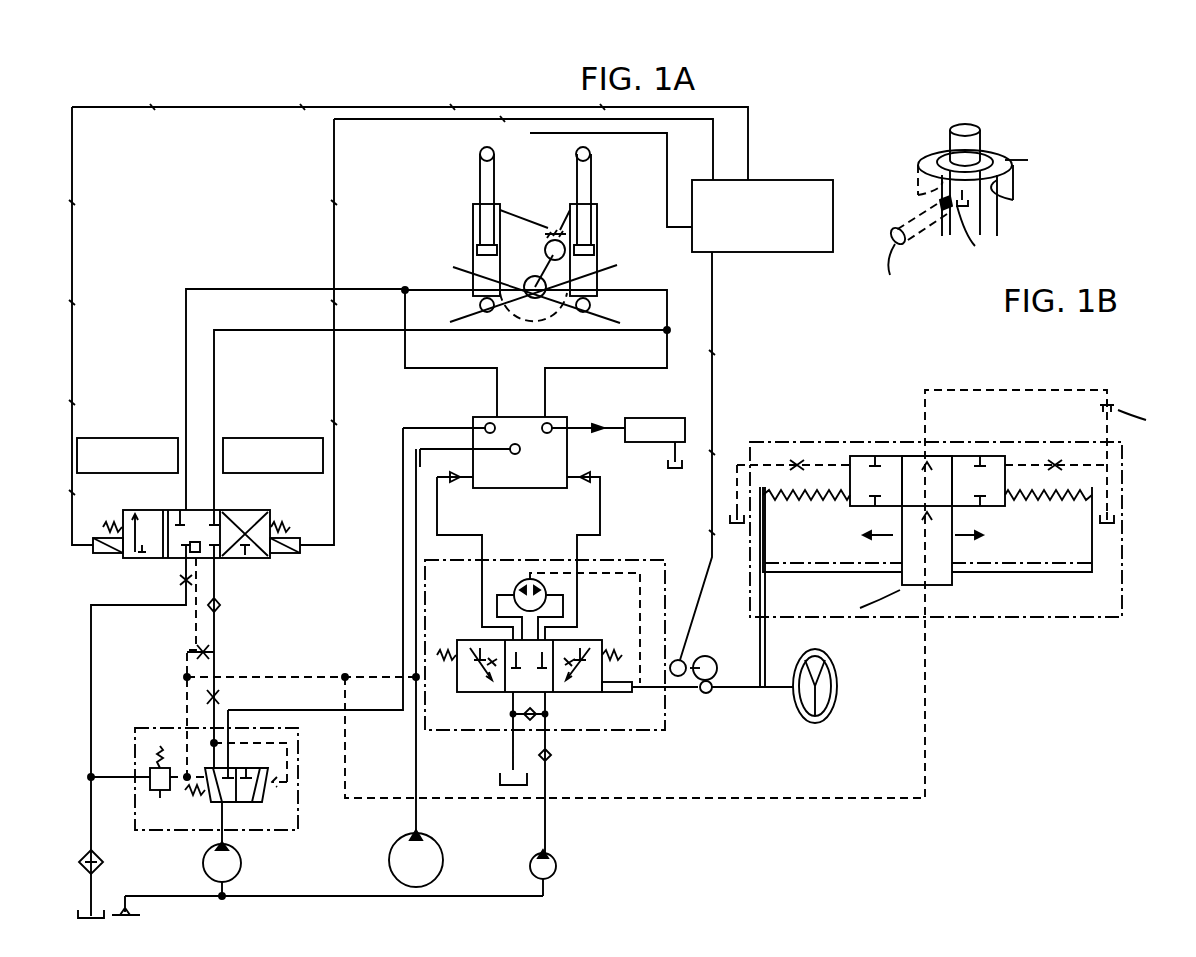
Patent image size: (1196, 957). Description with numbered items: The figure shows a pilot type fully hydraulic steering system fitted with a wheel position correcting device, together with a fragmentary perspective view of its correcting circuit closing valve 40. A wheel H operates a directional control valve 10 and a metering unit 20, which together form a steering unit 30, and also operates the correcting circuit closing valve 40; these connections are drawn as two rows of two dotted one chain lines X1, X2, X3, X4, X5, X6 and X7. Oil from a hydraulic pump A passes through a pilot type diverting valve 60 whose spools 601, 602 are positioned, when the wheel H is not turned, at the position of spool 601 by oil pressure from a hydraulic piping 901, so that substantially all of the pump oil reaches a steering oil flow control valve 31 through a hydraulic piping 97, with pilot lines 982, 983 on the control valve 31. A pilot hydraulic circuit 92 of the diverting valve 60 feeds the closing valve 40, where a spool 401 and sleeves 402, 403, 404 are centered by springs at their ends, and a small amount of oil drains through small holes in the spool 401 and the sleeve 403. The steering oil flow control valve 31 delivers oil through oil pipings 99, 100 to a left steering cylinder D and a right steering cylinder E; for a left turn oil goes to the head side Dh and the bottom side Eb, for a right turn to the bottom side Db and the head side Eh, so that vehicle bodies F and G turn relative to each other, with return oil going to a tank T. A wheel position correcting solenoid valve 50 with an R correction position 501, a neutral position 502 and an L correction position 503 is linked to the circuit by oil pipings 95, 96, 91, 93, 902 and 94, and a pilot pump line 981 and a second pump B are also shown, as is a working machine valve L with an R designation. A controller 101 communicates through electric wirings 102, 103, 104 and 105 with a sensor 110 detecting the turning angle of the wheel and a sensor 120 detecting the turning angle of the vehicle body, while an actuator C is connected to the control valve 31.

In FIG. 1A, the controller 101 is at (798, 180).
In FIG. 1A, the electric wiring 102 is at (714, 369).
In FIG. 1A, the electric wiring 103 is at (665, 165).
In FIG. 1A, the electric wiring 104 is at (713, 166).
In FIG. 1A, the electric wiring 105 is at (752, 134).
In FIG. 1A, the sensor 120 is at (555, 238).
In FIG. 1A, the oil piping 99 is at (458, 368).
In FIG. 1A, the oil piping 100 is at (583, 368).
In FIG. 1A, the oil piping 96 is at (186, 343).
In FIG. 1A, the oil piping 95 is at (214, 386).
In FIG. 1A, the wheel position correcting solenoid valve 50 is at (262, 510).
In FIG. 1A, the R correction position 501 is at (242, 510).
In FIG. 1A, the position of wheel position correcting solenoid valve 502 is at (180, 510).
In FIG. 1A, the L correction position 503 is at (135, 510).
In FIG. 1A, the steering oil flow control valve 31 is at (525, 488).
In FIG. 1A, the oil piping 982 is at (437, 516).
In FIG. 1A, the oil piping 983 is at (600, 516).
In FIG. 1A, the steering unit 30 is at (644, 560).
In FIG. 1A, the metering unit 20 is at (516, 588).
In FIG. 1A, the directional control valve 10 is at (570, 692).
In FIG. 1A, the sensor 110 is at (686, 660).
In FIG. 1A, the oil piping 91 is at (190, 648).
In FIG. 1A, the oil piping 93 is at (91, 677).
In FIG. 1A, the oil piping 902 is at (214, 630).
In FIG. 1A, the hydraulic piping 901 is at (222, 705).
In FIG. 1A, the hydraulic piping 97 is at (345, 685).
In FIG. 1A, the pilot type diverting valve 60 is at (298, 733).
In FIG. 1A, the spool 601 is at (238, 803).
In FIG. 1A, the spool 602 is at (200, 805).
In FIG. 1A, the oil piping 981 is at (548, 824).
In FIG. 1A, the pilot hydraulic circuit 92 is at (642, 798).
In FIG. 1A, the oil piping 94 is at (997, 390).
In FIG. 1A, the correcting circuit closing valve 40 is at (1122, 510).
In FIG. 1B, the correcting circuit closing valve 40 is at (1015, 213).
In FIG. 1A, the spool 401 is at (952, 588).
In FIG. 1B, the spool 401 is at (980, 135).
In FIG. 1A, the sleeve 402 is at (1008, 456).
In FIG. 1A, the sleeve 403 is at (940, 456).
In FIG. 1A, the sleeve 404 is at (870, 456).
In FIG. 1A, the left steering cylinder D is at (473, 200).
In FIG. 1A, the head side of left steering cylinder Dh is at (473, 218).
In FIG. 1A, the bottom side of left steering cylinder Db is at (473, 262).
In FIG. 1A, the right steering cylinder E is at (597, 200).
In FIG. 1A, the head side of right steering cylinder Eh is at (597, 228).
In FIG. 1A, the bottom side of right steering cylinder Eb is at (597, 262).
In FIG. 1A, the vehicle body F is at (455, 270).
In FIG. 1A, the vehicle body G is at (462, 312).
In FIG. 1A, the actuator C is at (643, 418).
In FIG. 1A, the tank T is at (668, 468).
In FIG. 1A, the hydraulic pump A is at (240, 852).
In FIG. 1A, the pump B is at (442, 855).
In FIG. 1A, the wheel H is at (830, 714).
In FIG. 1A, the working machine valve L is at (127, 455).
In FIG. 1A, the R correction R is at (273, 455).
In FIG. 1A, the two dotted one chain line X1 is at (748, 690).
In FIG. 1A, the two dotted one chain line X2 is at (630, 692).
In FIG. 1A, the two dotted one chain line X3 is at (640, 630).
In FIG. 1A, the two dotted one chain line X4 is at (624, 578).
In FIG. 1A, the two dotted one chain line X5 is at (766, 630).
In FIG. 1A, the two dotted one chain line X6 is at (815, 572).
In FIG. 1A, the two dotted one chain line X7 is at (1025, 572).